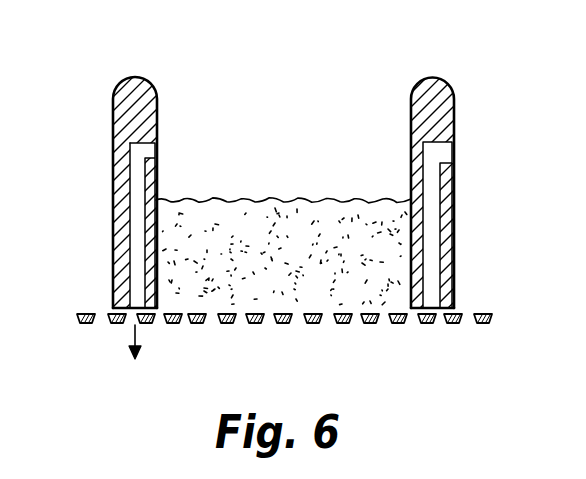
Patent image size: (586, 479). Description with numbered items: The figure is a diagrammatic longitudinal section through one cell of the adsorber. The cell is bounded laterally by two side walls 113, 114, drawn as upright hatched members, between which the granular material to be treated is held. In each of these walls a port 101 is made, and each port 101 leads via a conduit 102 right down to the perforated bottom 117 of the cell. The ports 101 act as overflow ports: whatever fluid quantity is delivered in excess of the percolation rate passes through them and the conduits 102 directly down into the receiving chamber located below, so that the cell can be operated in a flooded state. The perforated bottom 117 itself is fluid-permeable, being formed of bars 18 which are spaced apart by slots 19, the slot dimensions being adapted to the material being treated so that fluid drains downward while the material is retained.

The side wall 113 is at (164, 104).
The side wall 114 is at (408, 103).
The port 101 is at (143, 150).
The conduit 102 is at (137, 243).
The perforated bottom 117 is at (490, 309).
The slot 19 is at (380, 324).
The bar 18 is at (428, 324).